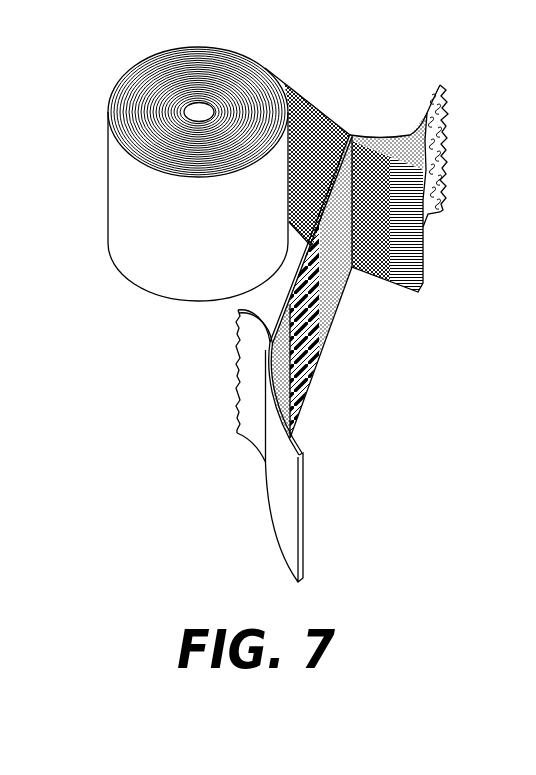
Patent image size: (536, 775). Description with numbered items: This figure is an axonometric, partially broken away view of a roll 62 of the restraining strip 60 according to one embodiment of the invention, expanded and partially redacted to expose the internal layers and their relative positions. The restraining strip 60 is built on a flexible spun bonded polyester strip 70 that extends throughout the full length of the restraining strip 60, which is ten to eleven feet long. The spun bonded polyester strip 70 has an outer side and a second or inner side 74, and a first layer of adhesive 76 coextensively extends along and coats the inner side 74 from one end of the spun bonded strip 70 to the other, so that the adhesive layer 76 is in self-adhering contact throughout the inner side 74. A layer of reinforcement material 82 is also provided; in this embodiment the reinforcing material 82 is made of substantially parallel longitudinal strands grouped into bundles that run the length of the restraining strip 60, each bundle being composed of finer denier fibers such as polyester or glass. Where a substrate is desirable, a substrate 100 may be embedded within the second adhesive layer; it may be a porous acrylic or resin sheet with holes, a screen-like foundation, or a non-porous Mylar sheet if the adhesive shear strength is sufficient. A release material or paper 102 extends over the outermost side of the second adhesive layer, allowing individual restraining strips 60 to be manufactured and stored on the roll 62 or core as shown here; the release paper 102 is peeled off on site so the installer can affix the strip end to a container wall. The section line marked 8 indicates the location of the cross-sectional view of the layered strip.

The restraining strip 60 is at (298, 306).
The roll 62 is at (226, 47).
The flexible spun bonded polyester strip 70 is at (453, 132).
The second or inner side 74 is at (297, 297).
The first layer of adhesive 76 is at (386, 133).
The layer of reinforcement material 82 is at (376, 288).
The substrate 100 is at (304, 388).
The release material or paper 102 is at (276, 522).
The section line 8 is at (273, 463).